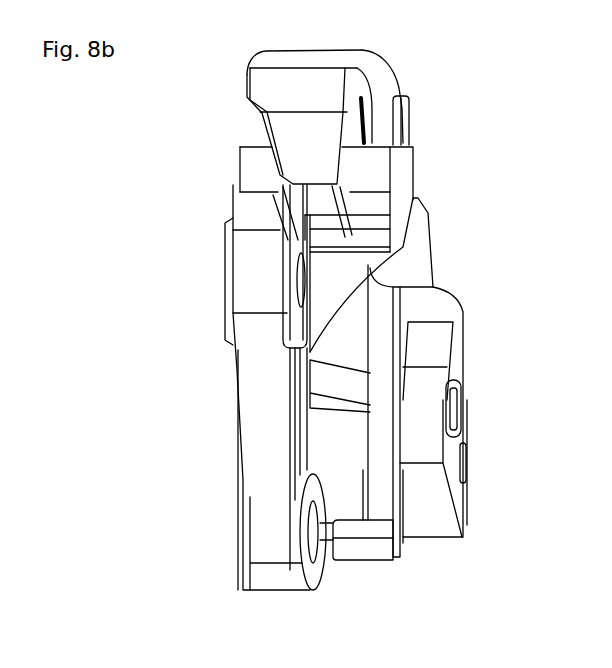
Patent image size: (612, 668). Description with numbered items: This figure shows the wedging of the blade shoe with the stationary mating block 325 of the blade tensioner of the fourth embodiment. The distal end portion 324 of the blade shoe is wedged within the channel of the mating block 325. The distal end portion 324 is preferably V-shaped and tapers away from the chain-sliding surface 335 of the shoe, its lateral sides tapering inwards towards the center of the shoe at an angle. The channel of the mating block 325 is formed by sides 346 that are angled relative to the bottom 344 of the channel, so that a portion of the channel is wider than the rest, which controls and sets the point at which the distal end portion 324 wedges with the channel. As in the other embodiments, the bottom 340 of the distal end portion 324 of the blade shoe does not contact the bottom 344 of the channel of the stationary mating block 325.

The distal end portion 324 is at (236, 177).
The chain-sliding surface 335 is at (378, 70).
The bottom 340 is at (300, 207).
The mating block 325 is at (403, 187).
The sides 346 is at (283, 191).
The bottom 344 is at (300, 207).